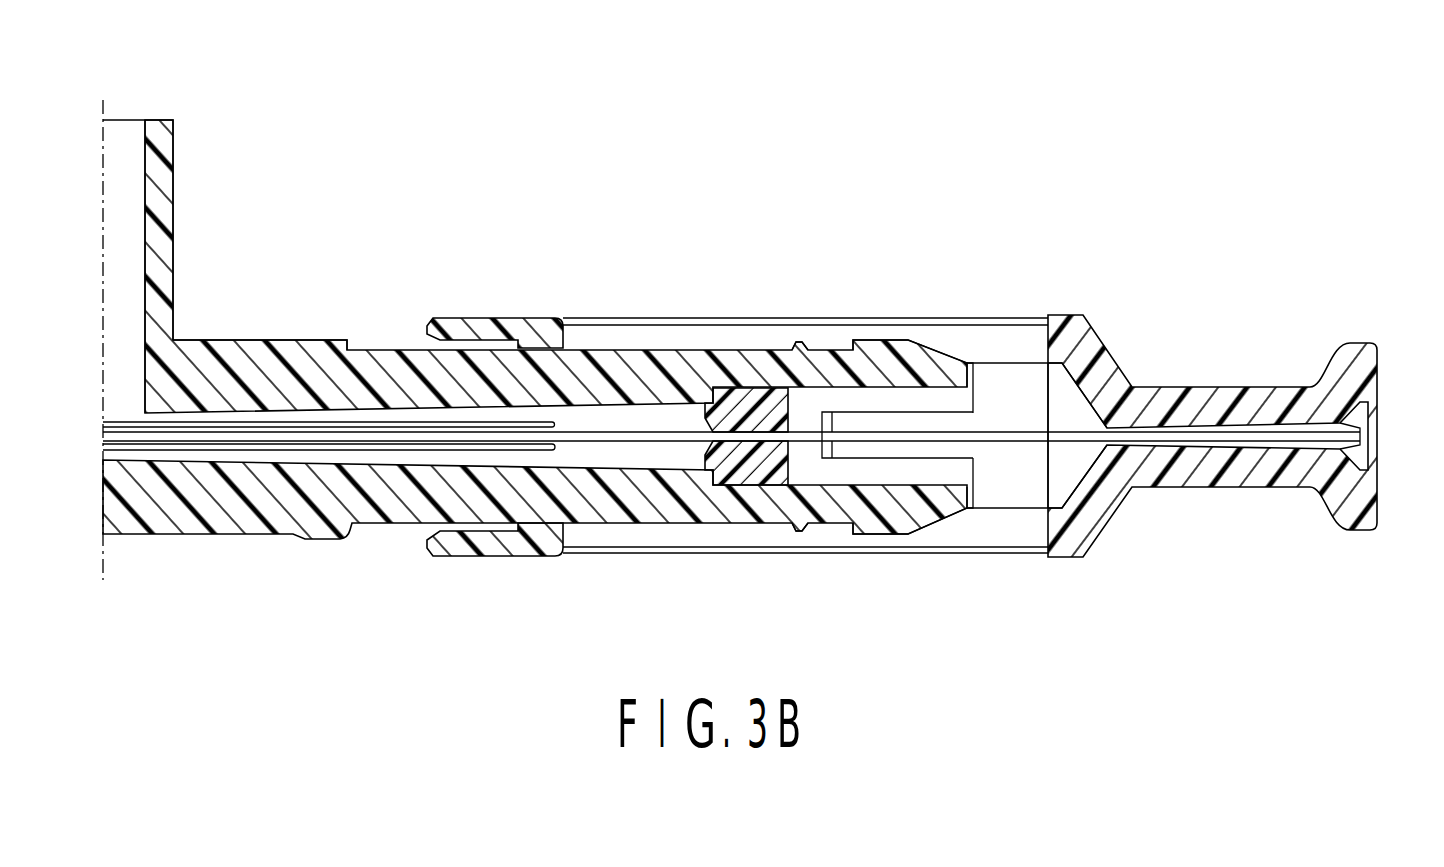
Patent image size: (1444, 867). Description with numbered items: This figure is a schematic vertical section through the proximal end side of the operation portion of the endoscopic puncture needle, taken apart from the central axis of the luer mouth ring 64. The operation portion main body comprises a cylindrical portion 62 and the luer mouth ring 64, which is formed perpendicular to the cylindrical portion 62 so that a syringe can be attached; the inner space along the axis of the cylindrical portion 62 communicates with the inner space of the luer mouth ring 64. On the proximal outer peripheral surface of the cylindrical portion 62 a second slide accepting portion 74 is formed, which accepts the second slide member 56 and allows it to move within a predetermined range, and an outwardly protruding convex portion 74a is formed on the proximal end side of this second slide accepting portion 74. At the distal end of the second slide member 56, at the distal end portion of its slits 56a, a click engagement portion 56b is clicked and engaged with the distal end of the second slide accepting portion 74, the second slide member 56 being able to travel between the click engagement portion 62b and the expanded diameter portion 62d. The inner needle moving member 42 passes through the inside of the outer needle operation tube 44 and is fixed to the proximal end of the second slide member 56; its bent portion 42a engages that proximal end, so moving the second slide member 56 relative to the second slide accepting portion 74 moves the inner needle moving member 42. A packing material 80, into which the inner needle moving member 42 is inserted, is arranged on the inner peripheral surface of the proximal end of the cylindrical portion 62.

The inner needle moving member 42 is at (1007, 442).
The bent portion 42a is at (1378, 432).
The outer needle operation tube 44 is at (394, 453).
The second slide member 56 is at (1075, 322).
The slits 56a is at (654, 318).
The click engagement portion 56b is at (455, 324).
The cylindrical portion 62 is at (215, 470).
The click engagement portion 62b is at (889, 524).
The expanded diameter portion 62d is at (300, 340).
The luer mouth ring 64 is at (126, 118).
The second slide accepting portion 74 is at (600, 528).
The convex portion 74a is at (801, 530).
The packing material 80 is at (737, 483).